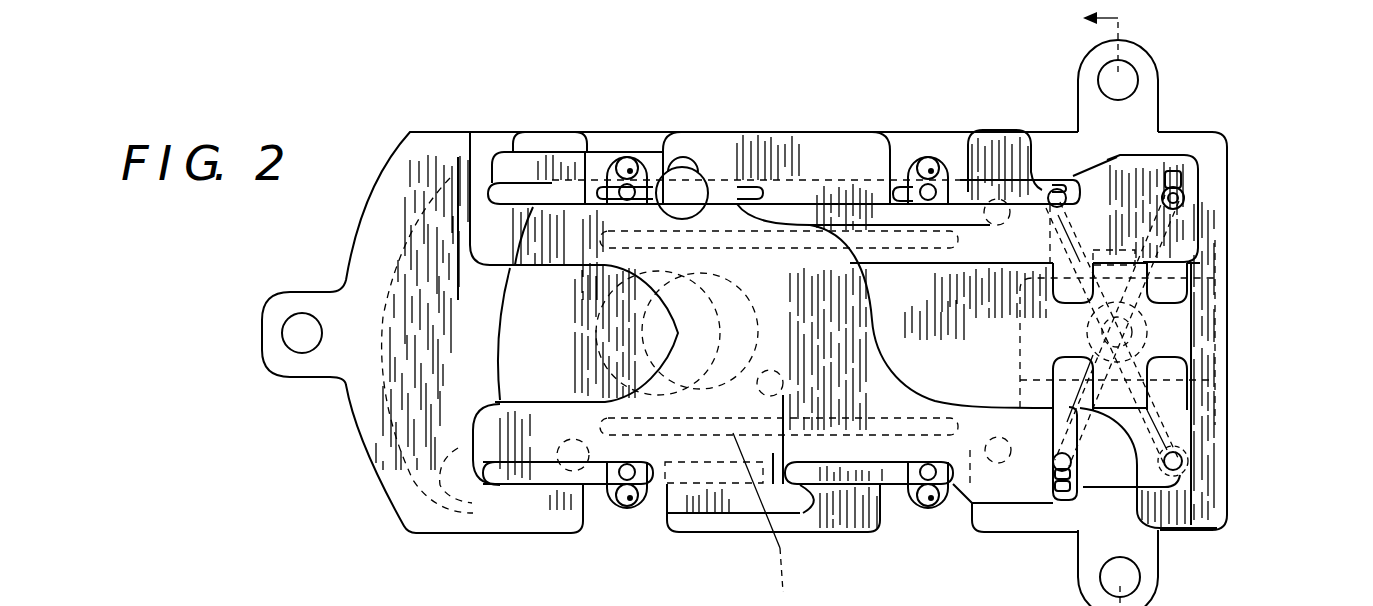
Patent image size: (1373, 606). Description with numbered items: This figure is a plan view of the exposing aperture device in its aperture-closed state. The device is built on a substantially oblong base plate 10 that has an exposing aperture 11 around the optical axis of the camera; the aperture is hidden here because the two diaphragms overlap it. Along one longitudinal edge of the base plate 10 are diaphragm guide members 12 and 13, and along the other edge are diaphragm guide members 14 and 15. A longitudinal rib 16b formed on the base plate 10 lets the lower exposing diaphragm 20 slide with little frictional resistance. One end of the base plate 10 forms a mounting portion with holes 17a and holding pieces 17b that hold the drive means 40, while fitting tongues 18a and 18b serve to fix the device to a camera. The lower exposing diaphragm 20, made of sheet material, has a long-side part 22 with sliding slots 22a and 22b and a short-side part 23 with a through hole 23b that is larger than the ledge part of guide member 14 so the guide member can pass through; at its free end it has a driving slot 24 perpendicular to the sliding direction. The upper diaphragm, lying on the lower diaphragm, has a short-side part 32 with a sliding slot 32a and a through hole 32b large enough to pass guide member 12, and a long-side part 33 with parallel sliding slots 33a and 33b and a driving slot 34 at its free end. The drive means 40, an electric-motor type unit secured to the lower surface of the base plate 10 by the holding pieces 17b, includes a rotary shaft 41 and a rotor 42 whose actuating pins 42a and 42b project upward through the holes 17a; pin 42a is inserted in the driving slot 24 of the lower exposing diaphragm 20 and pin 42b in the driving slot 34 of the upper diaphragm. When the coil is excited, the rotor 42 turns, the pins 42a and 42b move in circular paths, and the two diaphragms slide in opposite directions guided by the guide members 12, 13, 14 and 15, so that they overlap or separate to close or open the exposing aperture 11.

The base plate 10 is at (393, 480).
The exposing aperture 11 is at (737, 307).
The diaphragm guide member 12 is at (633, 152).
The diaphragm guide member 13 is at (928, 157).
The diaphragm guide member 14 is at (612, 512).
The diaphragm guide member 15 is at (928, 508).
The longitudinal rib 16b is at (772, 519).
The hole 17a is at (1175, 310).
The holding piece 17b is at (1157, 390).
The fitting tongue 18a is at (1083, 82).
The fitting tongue 18b is at (1153, 567).
The lower exposing diaphragm 20 is at (510, 352).
The long-side part 22 is at (870, 187).
The sliding slot 22a is at (712, 170).
The sliding slot 22b is at (1030, 187).
The short-side part 23 is at (657, 507).
The through hole 23b is at (550, 513).
The driving slot 24 is at (1178, 175).
The short-side part 32 is at (527, 162).
The sliding slot 32a is at (492, 178).
The through hole 32b is at (683, 158).
The long-side part 33 is at (710, 453).
The sliding slot 33a is at (483, 490).
The sliding slot 33b is at (800, 487).
The driving slot 34 is at (1083, 486).
The drive means 40 is at (1207, 255).
The rotary shaft 41 is at (1147, 333).
The rotor 42 is at (1167, 528).
The actuating pin 42a is at (1184, 199).
The actuating pin 42b is at (1052, 462).